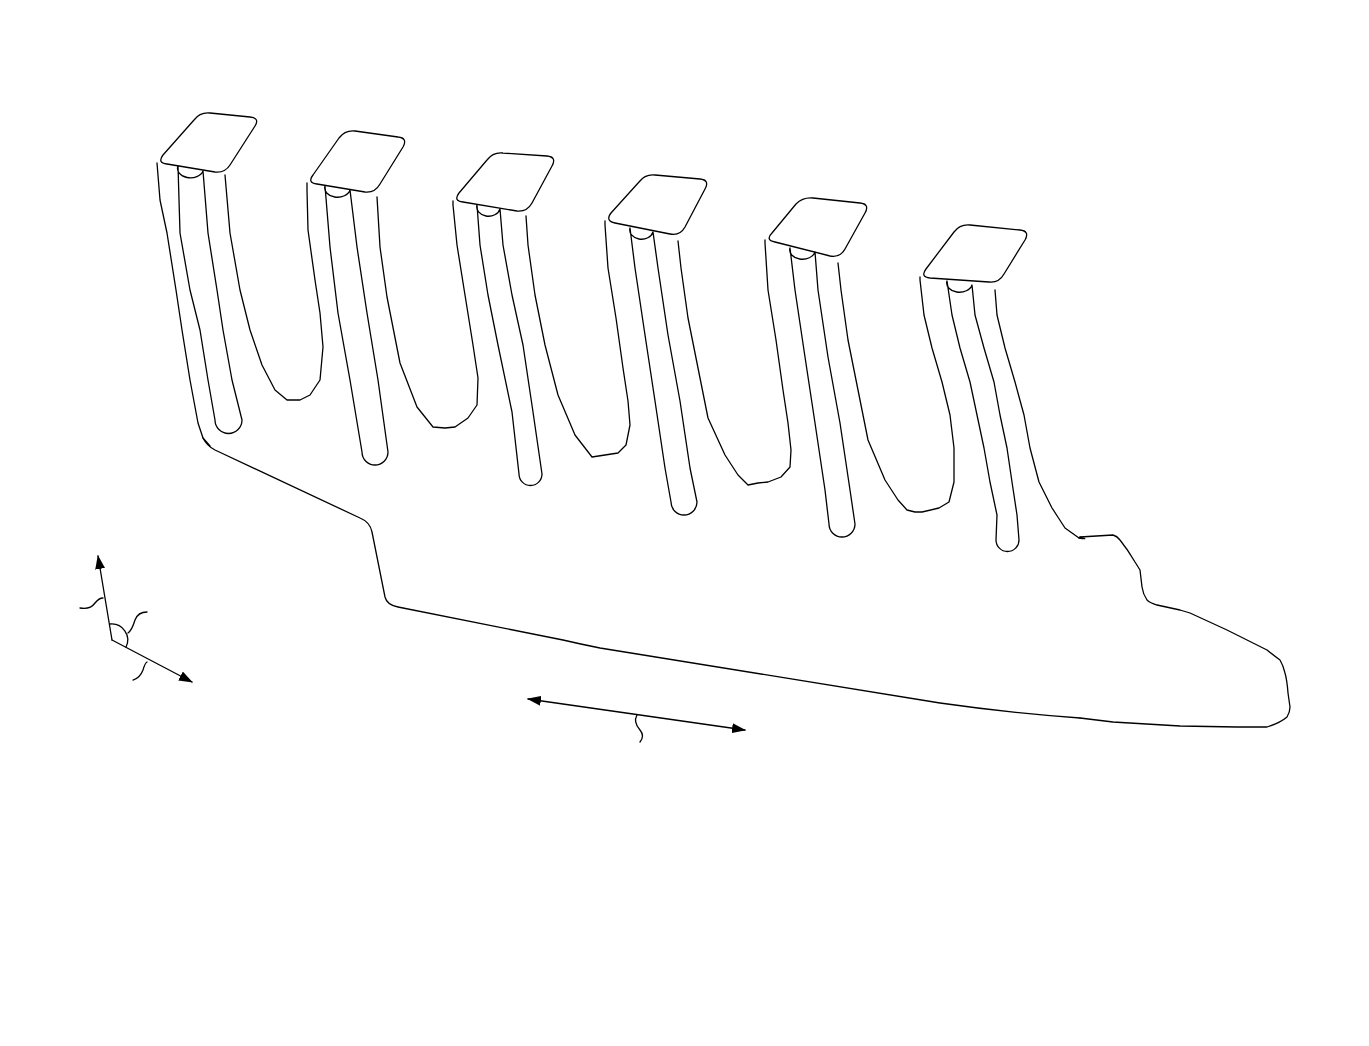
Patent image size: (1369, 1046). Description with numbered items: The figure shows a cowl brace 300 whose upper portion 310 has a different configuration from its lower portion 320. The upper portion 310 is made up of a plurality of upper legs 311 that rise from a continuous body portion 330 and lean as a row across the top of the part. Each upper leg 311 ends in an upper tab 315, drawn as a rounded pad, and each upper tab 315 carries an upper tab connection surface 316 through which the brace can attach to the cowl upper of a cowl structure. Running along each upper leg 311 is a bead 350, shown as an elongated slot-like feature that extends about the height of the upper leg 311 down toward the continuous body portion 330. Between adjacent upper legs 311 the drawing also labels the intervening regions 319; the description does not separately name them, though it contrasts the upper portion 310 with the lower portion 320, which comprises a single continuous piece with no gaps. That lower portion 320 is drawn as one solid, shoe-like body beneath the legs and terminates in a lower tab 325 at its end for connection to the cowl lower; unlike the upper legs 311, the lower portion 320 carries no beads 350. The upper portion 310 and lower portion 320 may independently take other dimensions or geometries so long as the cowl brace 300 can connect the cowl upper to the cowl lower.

The cowl brace 300 is at (708, 422).
The upper portion 310 is at (566, 307).
The upper legs 311 is at (237, 233).
The upper tabs 315 is at (232, 112).
The upper tab connection surfaces 316 is at (236, 151).
The gap between fins 319 is at (620, 156).
The lower portion 320 is at (783, 582).
The lower tab 325 is at (1293, 681).
The continuous body portion 330 is at (136, 304).
The beads 350 is at (192, 288).